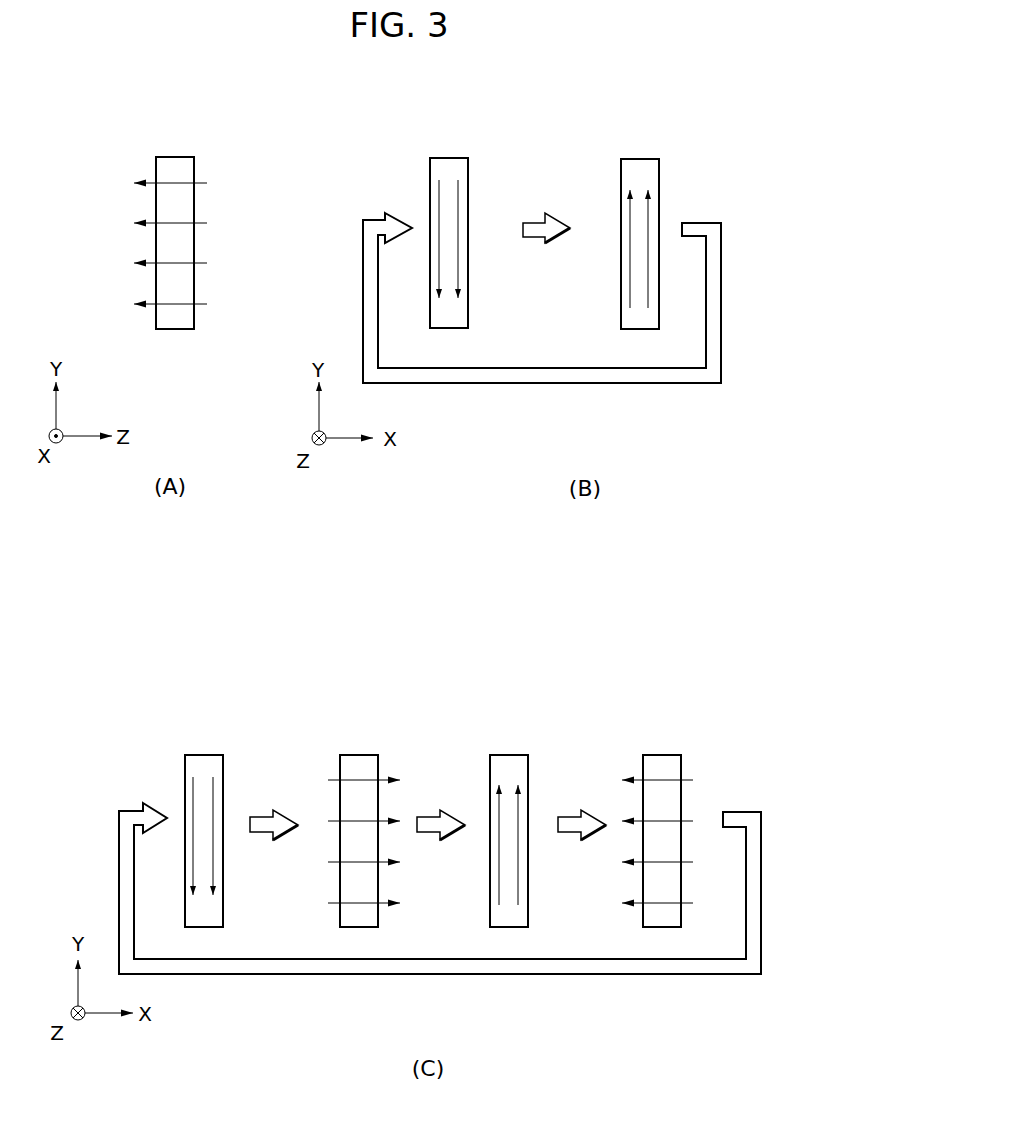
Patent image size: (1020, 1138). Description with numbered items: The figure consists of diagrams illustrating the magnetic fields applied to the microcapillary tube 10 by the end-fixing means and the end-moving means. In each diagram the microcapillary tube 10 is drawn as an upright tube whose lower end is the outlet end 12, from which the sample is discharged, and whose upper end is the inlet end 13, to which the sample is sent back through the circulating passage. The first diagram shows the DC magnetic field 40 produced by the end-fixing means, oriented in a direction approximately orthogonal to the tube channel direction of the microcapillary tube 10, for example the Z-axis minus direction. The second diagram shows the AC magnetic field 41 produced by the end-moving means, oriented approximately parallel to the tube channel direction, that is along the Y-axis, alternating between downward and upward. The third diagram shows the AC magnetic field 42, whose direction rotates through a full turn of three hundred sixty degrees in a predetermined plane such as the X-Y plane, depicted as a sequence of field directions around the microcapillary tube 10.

The microcapillary tube 10 is at (195, 163).
The outlet end 12 is at (178, 330).
The inlet end 13 is at (175, 157).
The DC magnetic field 40 is at (196, 223).
The AC magnetic field 41 is at (460, 220).
The AC magnetic field 42 is at (215, 797).